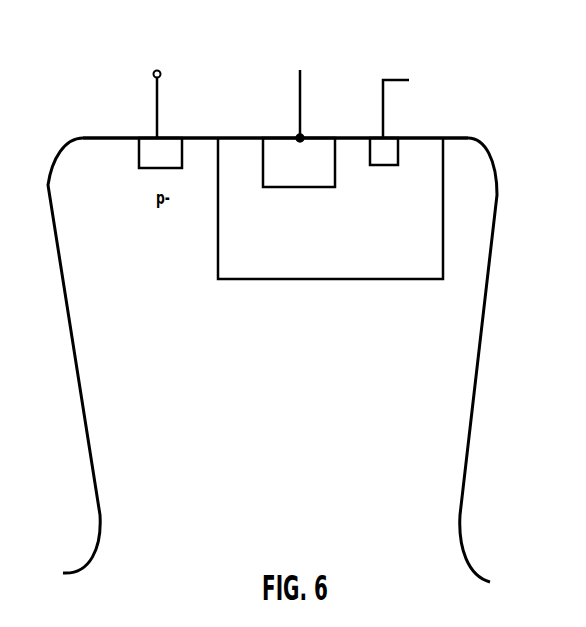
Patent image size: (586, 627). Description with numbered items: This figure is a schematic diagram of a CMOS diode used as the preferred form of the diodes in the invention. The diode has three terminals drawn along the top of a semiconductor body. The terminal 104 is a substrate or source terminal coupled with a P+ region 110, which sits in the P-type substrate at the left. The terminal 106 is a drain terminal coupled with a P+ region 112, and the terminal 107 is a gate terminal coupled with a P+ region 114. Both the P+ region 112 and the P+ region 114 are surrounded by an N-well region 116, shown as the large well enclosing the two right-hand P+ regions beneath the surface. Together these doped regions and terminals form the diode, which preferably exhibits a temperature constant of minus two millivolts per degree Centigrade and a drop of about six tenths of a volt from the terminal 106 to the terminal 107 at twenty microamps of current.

The terminal 104 is at (164, 137).
The terminal 106 is at (300, 96).
The terminal 107 is at (383, 101).
The P+ region 110 is at (138, 167).
The P+ region 112 is at (316, 147).
The P+ region 114 is at (398, 152).
The N-well region 116 is at (435, 212).